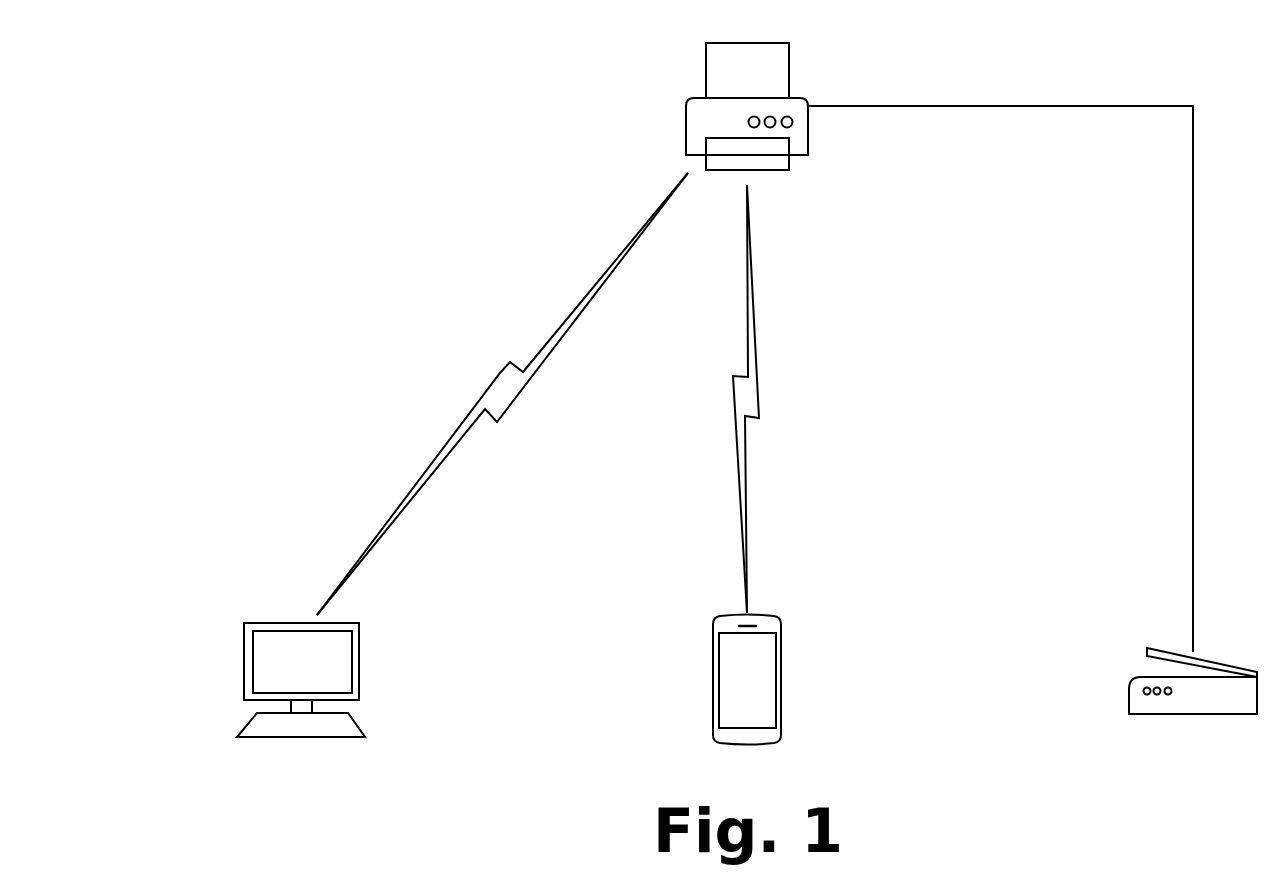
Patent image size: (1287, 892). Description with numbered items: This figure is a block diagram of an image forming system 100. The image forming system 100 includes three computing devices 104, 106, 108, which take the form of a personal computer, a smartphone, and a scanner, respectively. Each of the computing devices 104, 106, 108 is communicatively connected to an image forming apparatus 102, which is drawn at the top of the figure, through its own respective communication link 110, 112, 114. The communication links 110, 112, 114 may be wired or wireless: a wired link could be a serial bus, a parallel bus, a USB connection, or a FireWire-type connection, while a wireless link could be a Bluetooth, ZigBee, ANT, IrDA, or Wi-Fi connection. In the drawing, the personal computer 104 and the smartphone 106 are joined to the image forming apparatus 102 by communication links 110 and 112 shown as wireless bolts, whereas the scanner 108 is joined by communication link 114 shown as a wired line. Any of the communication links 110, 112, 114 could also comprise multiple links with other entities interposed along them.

The image forming system 100 is at (370, 88).
The image forming apparatus 102 is at (690, 98).
The computing device 104 is at (254, 623).
The computing device 106 is at (722, 616).
The computing device 108 is at (1158, 648).
The communication link 110 is at (501, 373).
The communication link 112 is at (743, 376).
The communication link 114 is at (1193, 323).